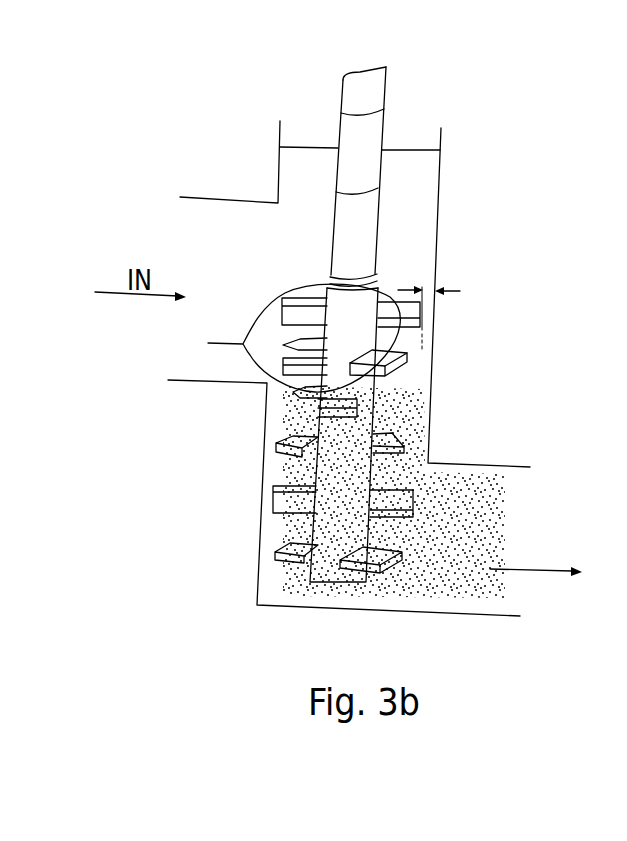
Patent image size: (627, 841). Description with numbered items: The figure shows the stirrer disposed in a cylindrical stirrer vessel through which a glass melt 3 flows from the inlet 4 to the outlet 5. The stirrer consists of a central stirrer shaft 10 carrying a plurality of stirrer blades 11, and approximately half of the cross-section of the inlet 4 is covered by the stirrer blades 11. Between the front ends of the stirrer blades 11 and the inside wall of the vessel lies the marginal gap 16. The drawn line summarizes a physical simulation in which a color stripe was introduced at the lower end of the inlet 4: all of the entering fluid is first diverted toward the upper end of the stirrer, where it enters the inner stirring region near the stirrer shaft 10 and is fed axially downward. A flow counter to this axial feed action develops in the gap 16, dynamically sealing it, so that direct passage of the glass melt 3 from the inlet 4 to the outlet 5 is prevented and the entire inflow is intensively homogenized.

The glass melt 3 is at (425, 193).
The inlet 4 is at (200, 212).
The outlet 5 is at (520, 525).
The stirrer shaft 10 is at (373, 95).
The stirrer blades 11 is at (403, 363).
The gap 16 is at (427, 318).